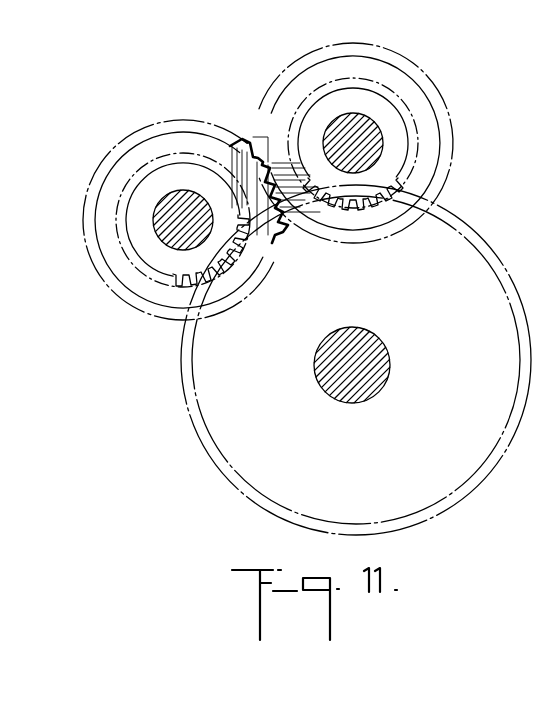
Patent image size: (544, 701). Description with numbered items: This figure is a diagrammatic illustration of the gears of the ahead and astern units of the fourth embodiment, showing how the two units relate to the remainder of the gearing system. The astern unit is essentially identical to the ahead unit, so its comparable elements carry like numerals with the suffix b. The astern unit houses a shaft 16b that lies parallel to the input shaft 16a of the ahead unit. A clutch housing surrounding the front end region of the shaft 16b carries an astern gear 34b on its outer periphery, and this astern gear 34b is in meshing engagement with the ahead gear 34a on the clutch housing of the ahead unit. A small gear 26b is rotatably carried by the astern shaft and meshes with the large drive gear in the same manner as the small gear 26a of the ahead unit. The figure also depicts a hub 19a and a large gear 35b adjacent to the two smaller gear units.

The input shaft 16a is at (366, 150).
The shaft 16b is at (158, 237).
The small gear 26a is at (415, 128).
The small gear 26b is at (153, 275).
The ahead gear 34a is at (397, 60).
The astern gear 34b is at (142, 131).
The shaft 19a is at (375, 372).
The gear 35b is at (192, 395).